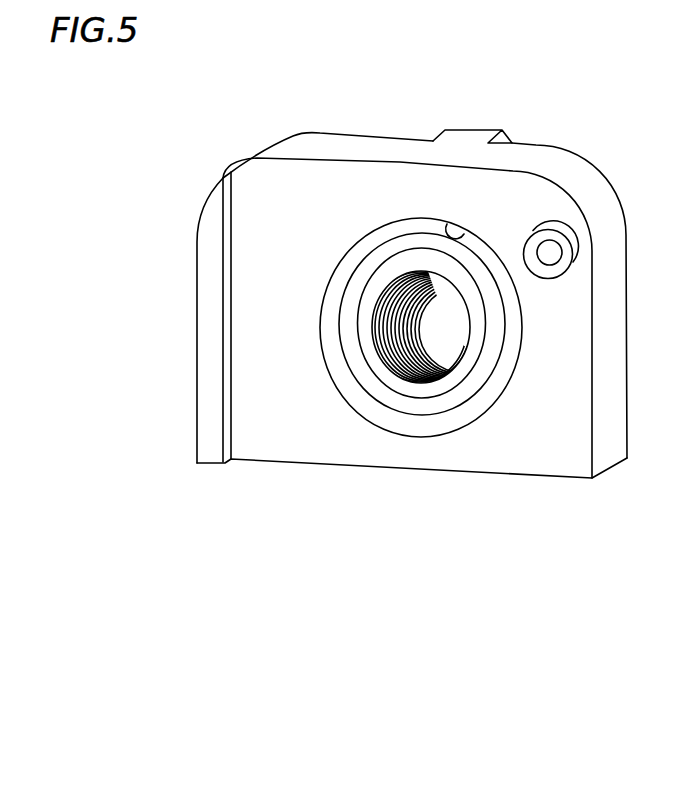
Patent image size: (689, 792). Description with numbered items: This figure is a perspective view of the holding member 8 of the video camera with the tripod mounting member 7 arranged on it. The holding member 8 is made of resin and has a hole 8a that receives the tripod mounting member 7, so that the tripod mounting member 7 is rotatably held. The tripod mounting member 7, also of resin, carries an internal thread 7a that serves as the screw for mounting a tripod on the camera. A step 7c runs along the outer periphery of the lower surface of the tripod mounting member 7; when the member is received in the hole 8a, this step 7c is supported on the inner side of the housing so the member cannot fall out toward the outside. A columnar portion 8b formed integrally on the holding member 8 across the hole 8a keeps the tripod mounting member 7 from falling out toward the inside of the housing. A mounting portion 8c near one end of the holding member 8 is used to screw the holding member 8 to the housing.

The tripod mounting member 7 is at (352, 357).
The internal thread 7a is at (427, 341).
The step 7c is at (472, 407).
The holding member 8 is at (375, 142).
The hole 8a is at (447, 224).
The columnar portion 8b is at (465, 138).
The mounting portion 8c is at (538, 243).